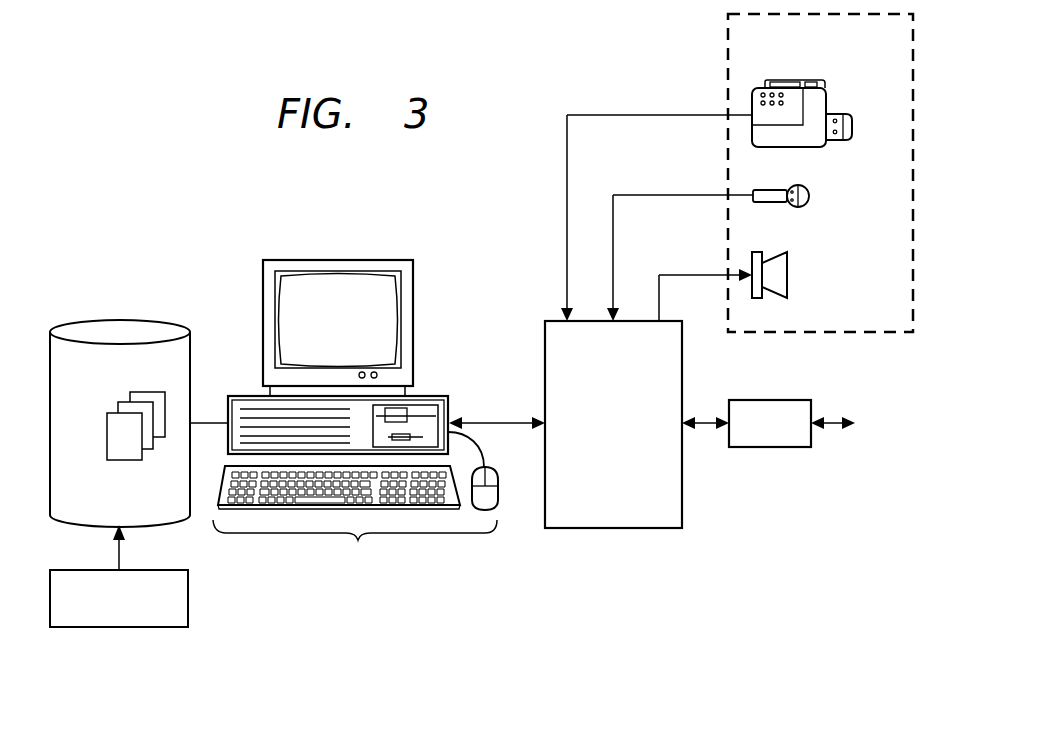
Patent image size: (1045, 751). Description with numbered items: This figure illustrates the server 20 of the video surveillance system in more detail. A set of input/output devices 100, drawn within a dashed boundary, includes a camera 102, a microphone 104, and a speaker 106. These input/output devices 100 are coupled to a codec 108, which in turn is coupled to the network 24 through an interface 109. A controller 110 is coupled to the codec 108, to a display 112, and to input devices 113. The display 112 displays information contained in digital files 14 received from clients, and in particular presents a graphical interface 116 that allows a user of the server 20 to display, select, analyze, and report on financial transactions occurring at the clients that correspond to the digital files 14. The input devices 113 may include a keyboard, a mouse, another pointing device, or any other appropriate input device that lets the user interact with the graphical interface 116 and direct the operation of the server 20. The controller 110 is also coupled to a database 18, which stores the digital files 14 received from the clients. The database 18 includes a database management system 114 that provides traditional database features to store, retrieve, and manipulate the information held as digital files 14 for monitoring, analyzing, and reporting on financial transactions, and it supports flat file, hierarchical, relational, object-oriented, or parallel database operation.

The server 20 is at (140, 250).
The database 18 is at (99, 320).
The digital files 14 is at (107, 437).
The database management system 114 is at (84, 630).
The display 112 is at (374, 307).
The graphical interface 116 is at (317, 290).
The controller 110 is at (428, 390).
The input devices 113 is at (355, 501).
The codec 108 is at (590, 456).
The interface 109 is at (785, 448).
The network 24 is at (880, 424).
The input/output devices 100 is at (728, 44).
The camera 102 is at (808, 80).
The microphone 104 is at (810, 200).
The speaker 106 is at (790, 286).